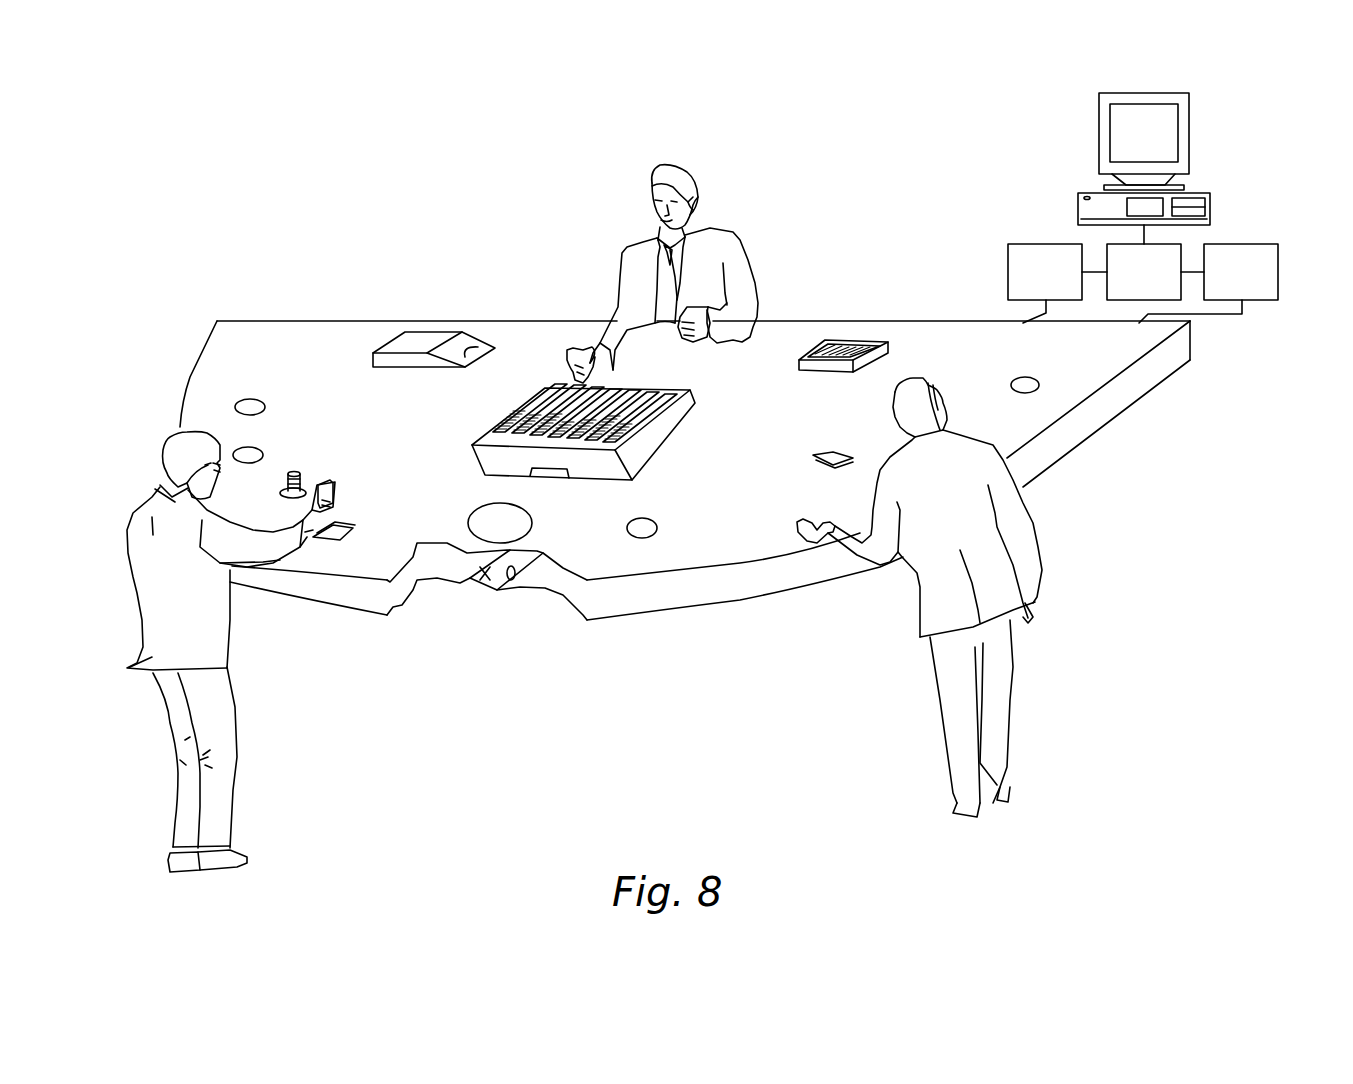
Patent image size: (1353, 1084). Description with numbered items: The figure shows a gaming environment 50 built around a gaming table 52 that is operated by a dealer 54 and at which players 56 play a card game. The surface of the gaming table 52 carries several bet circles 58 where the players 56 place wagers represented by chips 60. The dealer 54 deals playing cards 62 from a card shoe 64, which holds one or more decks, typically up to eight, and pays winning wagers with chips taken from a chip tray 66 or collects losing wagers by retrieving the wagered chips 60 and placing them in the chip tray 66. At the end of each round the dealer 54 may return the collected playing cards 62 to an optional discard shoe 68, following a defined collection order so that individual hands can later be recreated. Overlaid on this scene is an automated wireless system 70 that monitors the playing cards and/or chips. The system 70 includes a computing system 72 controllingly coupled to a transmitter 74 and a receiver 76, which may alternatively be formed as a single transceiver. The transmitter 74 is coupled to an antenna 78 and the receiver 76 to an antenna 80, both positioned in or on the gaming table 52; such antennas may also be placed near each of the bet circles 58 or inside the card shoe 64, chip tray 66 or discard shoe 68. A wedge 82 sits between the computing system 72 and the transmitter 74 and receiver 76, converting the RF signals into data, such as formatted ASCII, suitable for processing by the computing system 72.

The gaming environment 50 is at (248, 175).
The gaming table 52 is at (283, 343).
The dealer 54 is at (707, 243).
The players 56 is at (218, 620).
The bet circles 58 is at (247, 457).
The chips 60 is at (300, 485).
The playing cards 62 is at (342, 522).
The card shoe 64 is at (433, 332).
The chip tray 66 is at (532, 403).
The discard shoe 68 is at (855, 340).
The automated wireless system 70 is at (983, 123).
The computing system 72 is at (1225, 168).
The transmitter 74 is at (1008, 272).
The receiver 76 is at (1278, 263).
The antenna 78 is at (470, 587).
The antenna 80 is at (500, 593).
The wedge 82 is at (1107, 258).